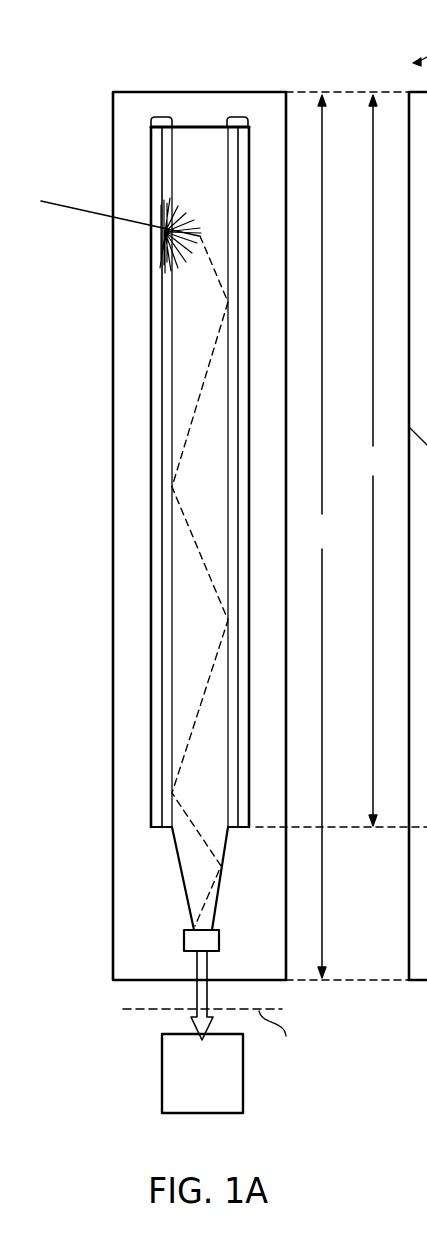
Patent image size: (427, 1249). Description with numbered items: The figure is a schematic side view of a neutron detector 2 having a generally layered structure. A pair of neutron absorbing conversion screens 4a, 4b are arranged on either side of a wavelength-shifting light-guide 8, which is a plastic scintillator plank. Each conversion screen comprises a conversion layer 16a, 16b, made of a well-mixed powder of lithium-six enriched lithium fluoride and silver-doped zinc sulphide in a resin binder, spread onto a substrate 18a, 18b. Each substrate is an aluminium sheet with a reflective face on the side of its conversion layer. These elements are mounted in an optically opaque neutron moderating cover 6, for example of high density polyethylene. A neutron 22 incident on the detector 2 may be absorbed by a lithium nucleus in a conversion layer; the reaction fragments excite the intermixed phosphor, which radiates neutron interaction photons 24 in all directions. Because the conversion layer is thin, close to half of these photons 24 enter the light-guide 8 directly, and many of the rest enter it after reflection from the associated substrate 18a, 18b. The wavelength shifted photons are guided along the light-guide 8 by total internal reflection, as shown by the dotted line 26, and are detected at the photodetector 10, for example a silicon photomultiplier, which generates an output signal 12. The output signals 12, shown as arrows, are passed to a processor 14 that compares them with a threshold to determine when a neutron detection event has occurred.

The neutron detector 2 is at (95, 59).
The neutron absorbing conversion screen 4a is at (160, 118).
The neutron absorbing conversion screen 4b is at (238, 118).
The neutron moderating cover 6 is at (128, 160).
The wavelength-shifting light-guide 8 is at (204, 127).
The photodetector 10 is at (184, 941).
The output signal 12 is at (208, 970).
The processor 14 is at (220, 1088).
The conversion layer 16a is at (163, 408).
The conversion layer 16b is at (233, 152).
The substrate 18a is at (150, 352).
The substrate 18b is at (242, 137).
The neutron 22 is at (92, 213).
The neutron interaction photons 24 is at (194, 222).
The dotted line 26 is at (203, 702).